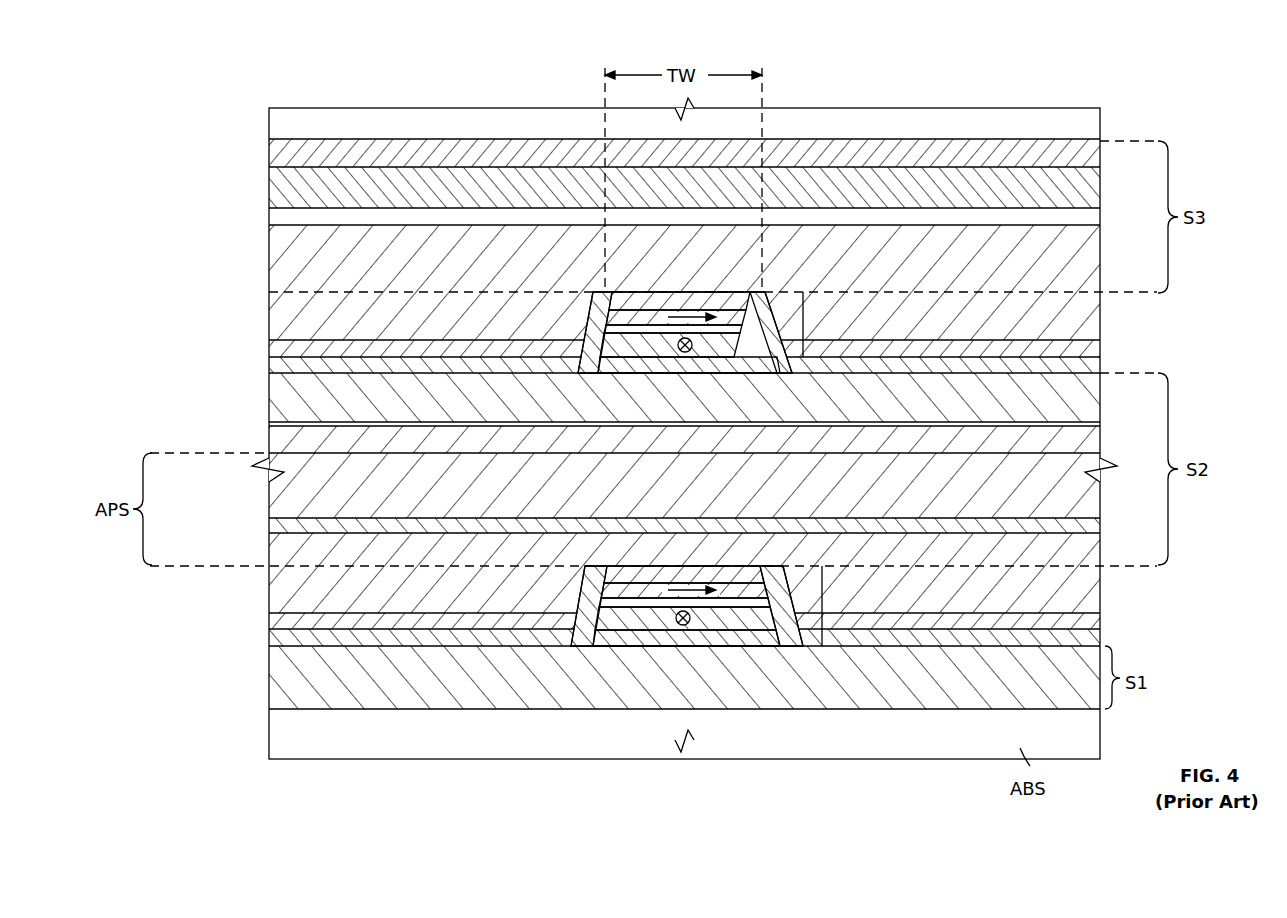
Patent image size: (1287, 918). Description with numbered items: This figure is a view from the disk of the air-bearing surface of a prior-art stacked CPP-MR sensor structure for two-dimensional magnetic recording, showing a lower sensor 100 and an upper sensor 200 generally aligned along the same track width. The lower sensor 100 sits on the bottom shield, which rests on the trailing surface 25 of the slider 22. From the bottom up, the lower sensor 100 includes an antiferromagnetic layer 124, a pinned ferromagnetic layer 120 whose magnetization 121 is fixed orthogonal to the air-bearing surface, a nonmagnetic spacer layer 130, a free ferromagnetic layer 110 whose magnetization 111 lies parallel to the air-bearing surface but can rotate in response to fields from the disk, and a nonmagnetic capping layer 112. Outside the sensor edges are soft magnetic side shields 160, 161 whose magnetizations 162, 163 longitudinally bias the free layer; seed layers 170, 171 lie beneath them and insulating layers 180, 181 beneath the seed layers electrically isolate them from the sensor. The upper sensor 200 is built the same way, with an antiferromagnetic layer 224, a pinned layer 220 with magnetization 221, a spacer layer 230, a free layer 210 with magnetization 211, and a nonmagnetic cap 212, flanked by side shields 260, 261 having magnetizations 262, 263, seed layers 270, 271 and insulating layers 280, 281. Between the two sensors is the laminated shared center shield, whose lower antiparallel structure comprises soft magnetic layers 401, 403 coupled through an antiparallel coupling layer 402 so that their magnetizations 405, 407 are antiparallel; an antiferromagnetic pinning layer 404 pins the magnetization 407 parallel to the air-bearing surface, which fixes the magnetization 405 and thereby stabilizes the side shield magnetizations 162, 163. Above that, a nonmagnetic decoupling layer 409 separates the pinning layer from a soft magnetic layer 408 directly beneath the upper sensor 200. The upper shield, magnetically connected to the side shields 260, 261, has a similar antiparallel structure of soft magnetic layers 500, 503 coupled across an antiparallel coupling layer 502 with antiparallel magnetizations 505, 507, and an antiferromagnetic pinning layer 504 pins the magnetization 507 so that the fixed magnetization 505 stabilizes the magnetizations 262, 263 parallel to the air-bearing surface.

The slider 22 is at (330, 750).
The trailing surface 25 is at (275, 686).
The lower sensor 100 is at (760, 618).
The free ferromagnetic layer 110 is at (640, 576).
The magnetization direction 111 is at (680, 592).
The nonmagnetic capping layer 112 is at (698, 562).
The pinned ferromagnetic layer 120 is at (605, 640).
The magnetization direction 121 is at (690, 645).
The antiferromagnetic layer 124 is at (652, 640).
The nonmagnetic spacer layer 130 is at (778, 640).
The side shield 160 is at (268, 594).
The side shield 161 is at (1090, 582).
The magnetization 162 is at (418, 598).
The magnetization 163 is at (820, 612).
The seed layer 170 is at (268, 621).
The seed layer 171 is at (1100, 623).
The insulating layer 180 is at (270, 636).
The insulating layer 181 is at (1100, 638).
The upper sensor 200 is at (753, 324).
The free layer 210 is at (646, 300).
The magnetization 211 is at (706, 300).
The nonmagnetic cap 212 is at (690, 300).
The pinned layer 220 is at (600, 362).
The magnetization 221 is at (688, 362).
The antiferromagnetic layer 224 is at (650, 368).
The spacer layer 230 is at (602, 300).
The side shield 260 is at (268, 316).
The side shield 261 is at (1100, 326).
The magnetization 262 is at (542, 327).
The magnetization 263 is at (818, 327).
The seed layer 270 is at (447, 346).
The seed layer 271 is at (905, 346).
The insulating layer 280 is at (360, 364).
The insulating layer 281 is at (998, 362).
The soft magnetic layer 401 is at (1119, 548).
The antiparallel coupling layer 402 is at (268, 526).
The soft magnetic layer 403 is at (1118, 494).
The antiferromagnetic pinning layer 404 is at (270, 447).
The magnetization 405 is at (417, 550).
The magnetization 407 is at (500, 487).
The soft magnetic layer 408 is at (270, 388).
The nonmagnetic decoupling layer 409 is at (270, 423).
The soft magnetic layer 500 is at (268, 252).
The antiparallel coupling layer 502 is at (988, 210).
The soft magnetic layer 503 is at (268, 192).
The antiferromagnetic pinning layer 504 is at (268, 158).
The magnetization 505 is at (545, 266).
The magnetization 507 is at (548, 199).